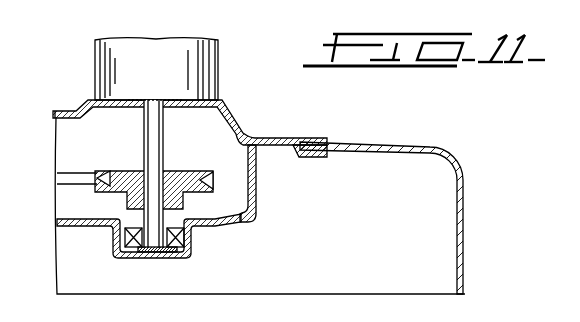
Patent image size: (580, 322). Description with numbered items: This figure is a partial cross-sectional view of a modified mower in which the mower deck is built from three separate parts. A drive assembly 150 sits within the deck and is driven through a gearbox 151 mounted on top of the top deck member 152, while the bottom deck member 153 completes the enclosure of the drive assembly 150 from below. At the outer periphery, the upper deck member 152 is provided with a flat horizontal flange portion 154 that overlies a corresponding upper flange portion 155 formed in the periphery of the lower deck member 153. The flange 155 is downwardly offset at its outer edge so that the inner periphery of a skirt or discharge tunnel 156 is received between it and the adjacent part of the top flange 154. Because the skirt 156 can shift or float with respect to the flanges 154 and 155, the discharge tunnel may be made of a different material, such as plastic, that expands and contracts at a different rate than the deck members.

The drive assembly 150 is at (210, 142).
The gearbox 151 is at (165, 74).
The top deck member 152 is at (78, 109).
The bottom deck member 153 is at (221, 224).
The flat horizontal flange portion 154 is at (297, 137).
The upper flange portion 155 is at (275, 147).
The skirt and/or discharge tunnel 156 is at (410, 146).